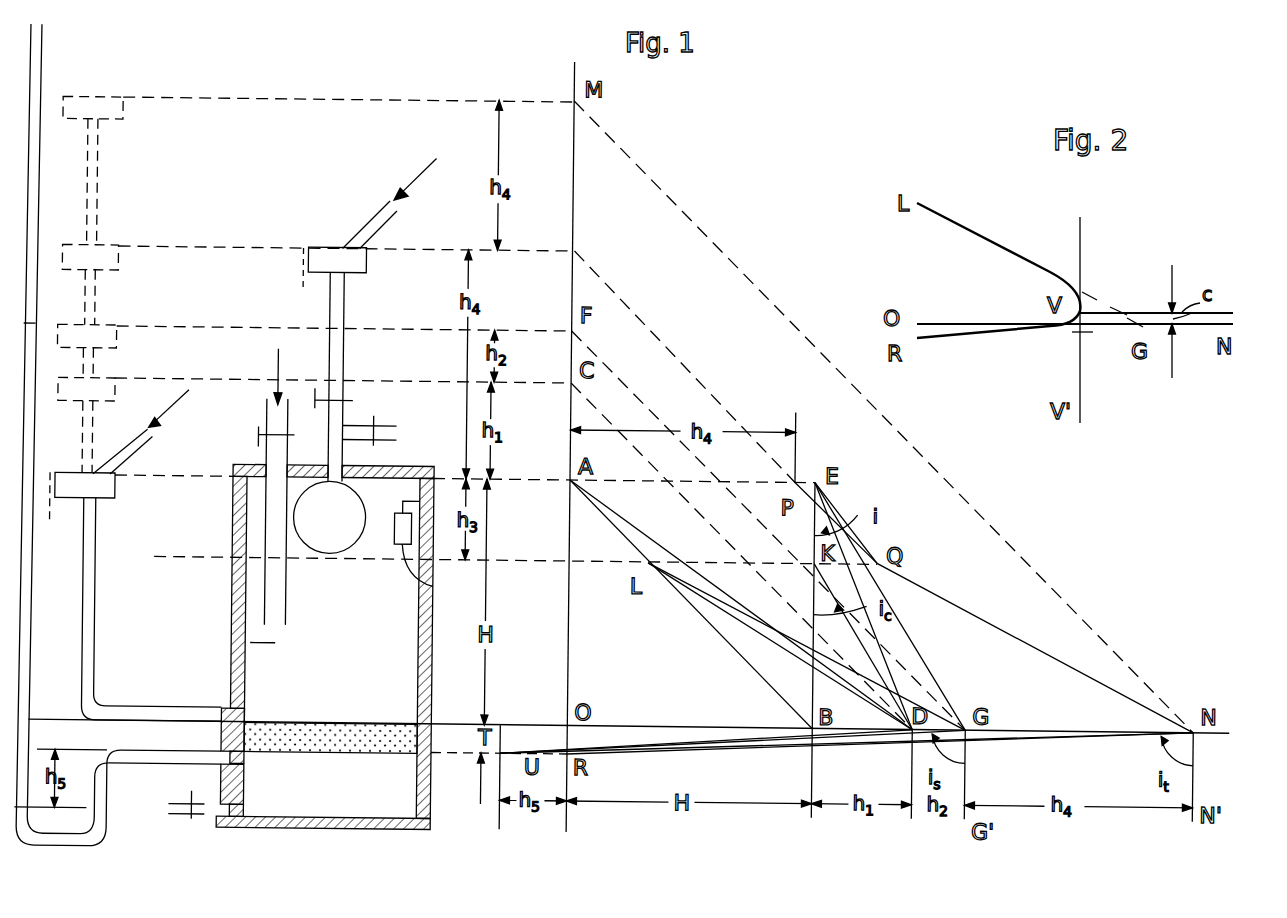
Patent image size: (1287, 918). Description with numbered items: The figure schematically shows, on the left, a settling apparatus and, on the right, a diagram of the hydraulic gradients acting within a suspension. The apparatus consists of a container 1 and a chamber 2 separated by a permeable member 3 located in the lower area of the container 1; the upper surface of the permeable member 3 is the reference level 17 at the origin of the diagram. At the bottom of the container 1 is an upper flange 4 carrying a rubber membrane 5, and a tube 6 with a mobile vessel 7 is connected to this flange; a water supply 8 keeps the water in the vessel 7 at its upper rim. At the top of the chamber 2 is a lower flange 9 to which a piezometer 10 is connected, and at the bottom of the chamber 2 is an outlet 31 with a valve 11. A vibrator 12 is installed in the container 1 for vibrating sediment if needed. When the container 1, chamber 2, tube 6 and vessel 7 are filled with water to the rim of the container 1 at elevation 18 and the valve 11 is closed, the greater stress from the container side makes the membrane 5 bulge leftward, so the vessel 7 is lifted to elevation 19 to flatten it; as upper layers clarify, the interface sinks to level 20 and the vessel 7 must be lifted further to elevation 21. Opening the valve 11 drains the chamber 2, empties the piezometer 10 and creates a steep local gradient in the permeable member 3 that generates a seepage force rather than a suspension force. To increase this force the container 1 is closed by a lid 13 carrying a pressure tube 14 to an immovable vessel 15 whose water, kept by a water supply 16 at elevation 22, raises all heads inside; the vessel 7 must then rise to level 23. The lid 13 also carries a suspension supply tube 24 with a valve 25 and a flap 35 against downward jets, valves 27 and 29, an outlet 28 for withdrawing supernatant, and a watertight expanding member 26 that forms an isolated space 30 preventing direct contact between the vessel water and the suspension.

The container 1 is at (390, 648).
The chamber 2 is at (310, 796).
The permeable member 3 is at (348, 746).
The upper flange 4 is at (222, 708).
The rubber membrane 5 is at (246, 720).
The tube 6 is at (93, 652).
The mobile vessel 7 is at (97, 504).
The water supply 8 is at (160, 446).
The lower flange 9 is at (228, 769).
The piezometer 10 is at (34, 474).
The valve 11 is at (197, 824).
The vibrator 12 is at (434, 590).
The lid 13 is at (376, 468).
The pressure tube 14 is at (344, 369).
The immovable vessel 15 is at (366, 277).
The water supply 16 is at (384, 225).
The reference level 17 is at (628, 714).
The elevation 18 is at (131, 452).
The elevation 19 is at (314, 415).
The level 20 is at (515, 546).
The elevation 21 is at (314, 342).
The elevation 22 is at (317, 275).
The level 23 is at (318, 161).
The suspension supply tube 24 is at (267, 408).
The valve 25 is at (256, 439).
The expanding member 26 is at (337, 545).
The valve 27 is at (308, 398).
The outlet 28 is at (388, 427).
The valve 29 is at (372, 417).
The isolated space 30 is at (350, 521).
The outlet 31 is at (176, 798).
The flap 35 is at (284, 645).